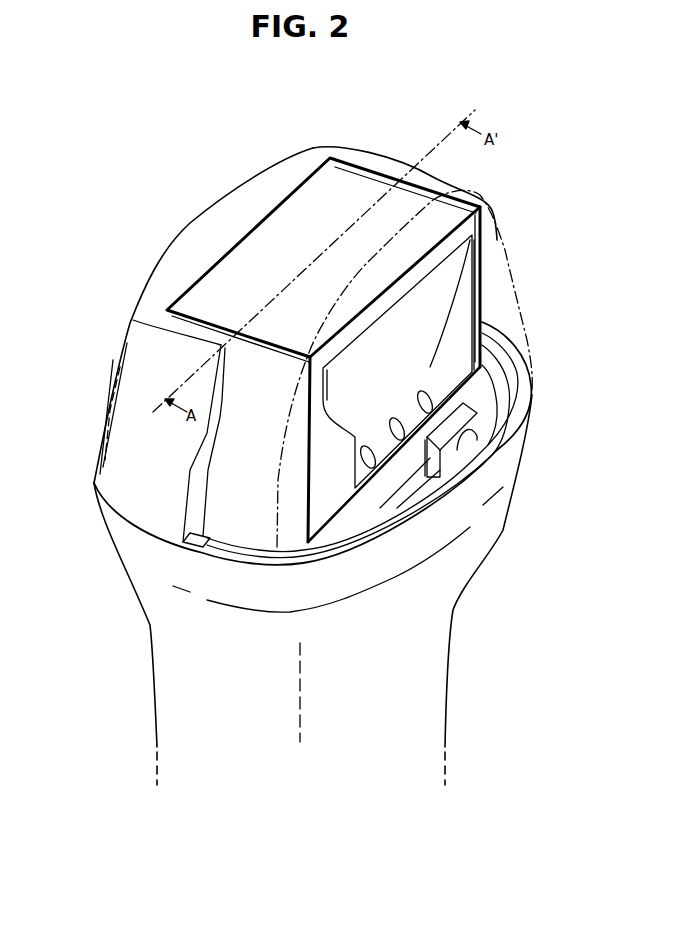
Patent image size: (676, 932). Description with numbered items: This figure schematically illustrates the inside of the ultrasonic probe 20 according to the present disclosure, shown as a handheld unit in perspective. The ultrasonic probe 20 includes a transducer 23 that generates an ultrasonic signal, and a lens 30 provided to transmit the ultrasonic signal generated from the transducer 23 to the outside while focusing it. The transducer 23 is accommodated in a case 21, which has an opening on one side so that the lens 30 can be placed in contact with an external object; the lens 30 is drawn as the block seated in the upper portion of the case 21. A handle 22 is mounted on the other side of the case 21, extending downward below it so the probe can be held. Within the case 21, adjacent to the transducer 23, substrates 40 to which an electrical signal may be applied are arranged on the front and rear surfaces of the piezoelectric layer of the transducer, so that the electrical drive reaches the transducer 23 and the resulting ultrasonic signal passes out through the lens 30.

The ultrasonic probe 20 is at (133, 160).
The case 21 is at (93, 462).
The handle 22 is at (164, 697).
The transducer 23 is at (484, 303).
The lens 30 is at (343, 180).
The substrate 40 is at (430, 367).